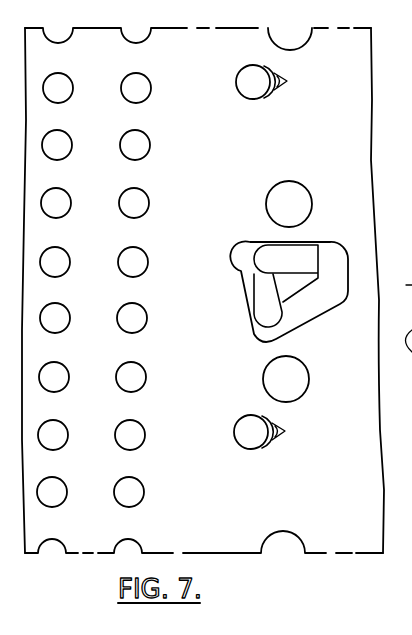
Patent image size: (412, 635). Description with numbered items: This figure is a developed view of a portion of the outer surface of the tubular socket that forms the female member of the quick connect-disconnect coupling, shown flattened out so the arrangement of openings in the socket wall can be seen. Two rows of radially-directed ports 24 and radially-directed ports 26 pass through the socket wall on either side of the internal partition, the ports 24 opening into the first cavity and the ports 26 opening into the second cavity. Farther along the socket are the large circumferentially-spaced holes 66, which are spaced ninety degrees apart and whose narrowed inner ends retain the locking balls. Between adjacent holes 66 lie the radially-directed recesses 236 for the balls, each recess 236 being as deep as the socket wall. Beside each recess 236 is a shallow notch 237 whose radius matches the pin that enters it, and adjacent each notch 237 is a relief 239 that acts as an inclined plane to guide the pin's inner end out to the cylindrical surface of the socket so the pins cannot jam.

The radially-directed ports 24 is at (56, 147).
The radially-directed ports 26 is at (136, 147).
The holes 66 is at (300, 47).
The recesses 236 is at (247, 92).
The notches 237 is at (273, 93).
The reliefs 239 is at (288, 82).